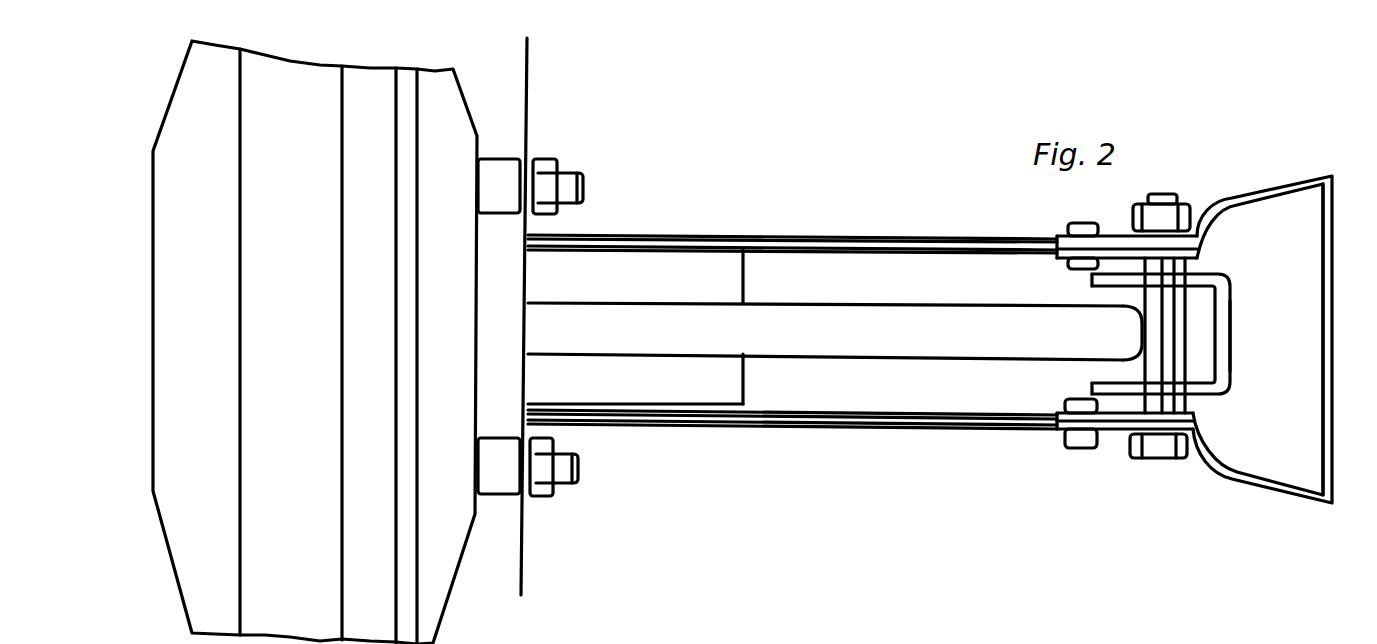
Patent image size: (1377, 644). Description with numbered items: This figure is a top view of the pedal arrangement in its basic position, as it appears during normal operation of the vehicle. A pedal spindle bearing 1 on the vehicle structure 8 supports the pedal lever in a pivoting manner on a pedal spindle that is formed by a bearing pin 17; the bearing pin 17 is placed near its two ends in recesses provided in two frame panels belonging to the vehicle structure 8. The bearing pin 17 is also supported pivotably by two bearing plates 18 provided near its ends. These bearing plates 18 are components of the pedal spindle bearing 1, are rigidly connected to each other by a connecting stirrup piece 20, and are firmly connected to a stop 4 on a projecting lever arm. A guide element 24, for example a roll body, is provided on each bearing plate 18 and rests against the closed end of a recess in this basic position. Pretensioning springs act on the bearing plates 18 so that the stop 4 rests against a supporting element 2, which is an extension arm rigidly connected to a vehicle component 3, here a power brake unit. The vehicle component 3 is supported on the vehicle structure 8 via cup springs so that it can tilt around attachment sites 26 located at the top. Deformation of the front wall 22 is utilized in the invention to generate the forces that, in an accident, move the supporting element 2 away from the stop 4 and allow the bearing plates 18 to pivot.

The pedal spindle bearing 1 is at (1085, 293).
The supporting element 2 is at (882, 327).
The vehicle component 3 is at (449, 70).
The stop 4 is at (1235, 303).
The vehicle structure 8 is at (773, 242).
The bearing pin 17 is at (1232, 352).
The bearing plates 18 is at (1120, 230).
The connecting stirrup piece 20 is at (1227, 385).
The front wall 22 is at (530, 52).
The guide element 24 is at (1095, 222).
The attachment sites 26 is at (506, 170).